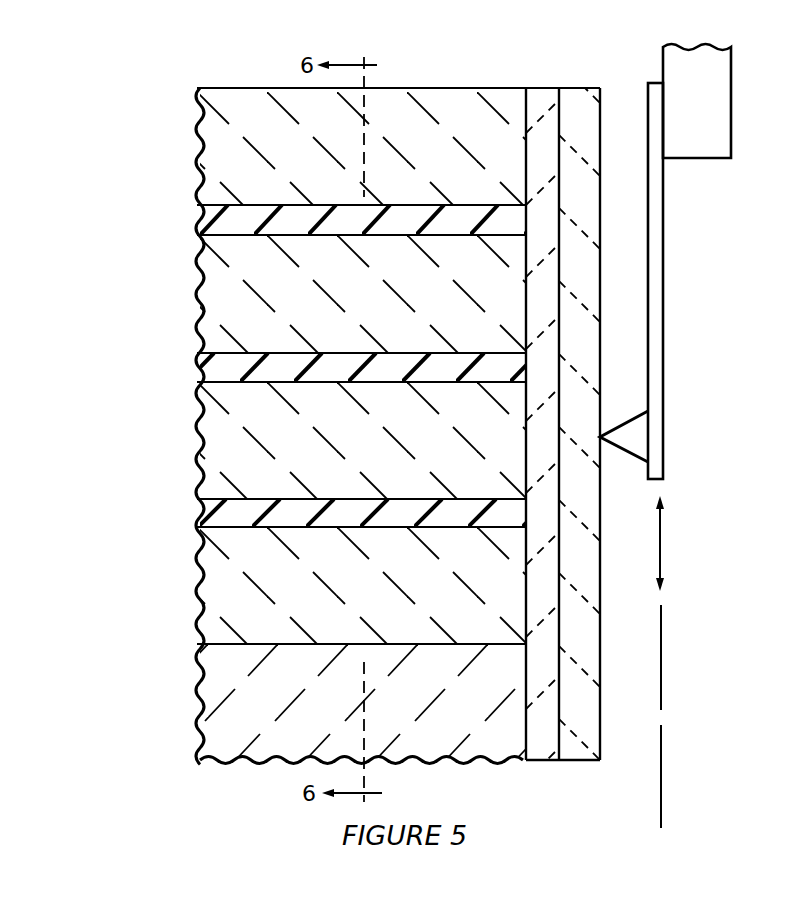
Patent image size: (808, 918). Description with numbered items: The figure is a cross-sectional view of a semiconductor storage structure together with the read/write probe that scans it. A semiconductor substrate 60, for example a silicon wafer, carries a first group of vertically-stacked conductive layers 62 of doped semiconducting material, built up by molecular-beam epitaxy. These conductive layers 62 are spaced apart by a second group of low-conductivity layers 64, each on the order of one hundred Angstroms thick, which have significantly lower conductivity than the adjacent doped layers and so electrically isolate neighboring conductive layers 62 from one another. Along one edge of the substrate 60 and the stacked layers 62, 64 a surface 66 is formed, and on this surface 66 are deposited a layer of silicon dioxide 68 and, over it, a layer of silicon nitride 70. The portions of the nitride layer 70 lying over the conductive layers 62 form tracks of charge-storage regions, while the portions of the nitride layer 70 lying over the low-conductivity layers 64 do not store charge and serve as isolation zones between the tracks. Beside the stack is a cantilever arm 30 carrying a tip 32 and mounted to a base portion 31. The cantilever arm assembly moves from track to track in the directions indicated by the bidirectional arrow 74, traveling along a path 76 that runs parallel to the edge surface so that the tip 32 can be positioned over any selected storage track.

The cantilever arm 30 is at (664, 228).
The base portion 31 is at (732, 105).
The tip 32 is at (632, 466).
The semiconductor substrate 60 is at (197, 712).
The conductive layers 62 is at (197, 118).
The low-conductivity layers 64 is at (197, 220).
The surface 66 is at (525, 86).
The layer of silicon dioxide 68 is at (537, 86).
The layer of silicon nitride 70 is at (577, 86).
The bidirectional arrow 74 is at (662, 537).
The path 76 is at (663, 660).